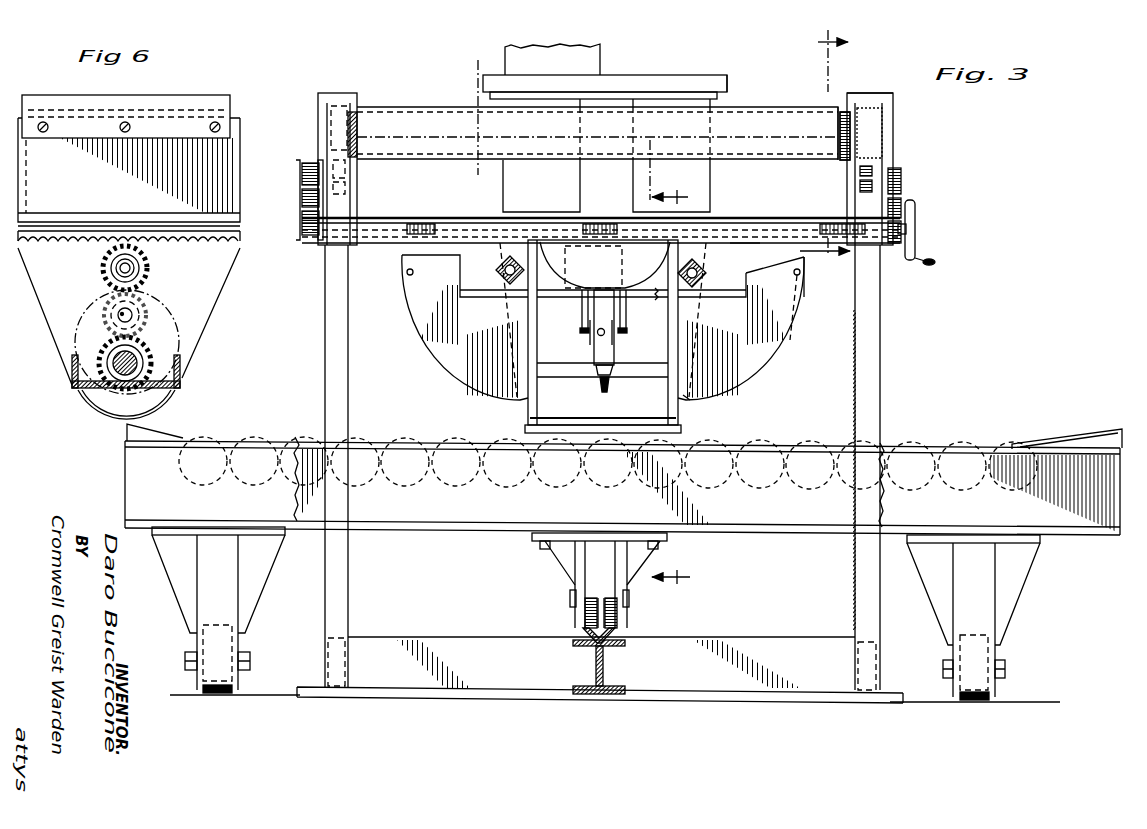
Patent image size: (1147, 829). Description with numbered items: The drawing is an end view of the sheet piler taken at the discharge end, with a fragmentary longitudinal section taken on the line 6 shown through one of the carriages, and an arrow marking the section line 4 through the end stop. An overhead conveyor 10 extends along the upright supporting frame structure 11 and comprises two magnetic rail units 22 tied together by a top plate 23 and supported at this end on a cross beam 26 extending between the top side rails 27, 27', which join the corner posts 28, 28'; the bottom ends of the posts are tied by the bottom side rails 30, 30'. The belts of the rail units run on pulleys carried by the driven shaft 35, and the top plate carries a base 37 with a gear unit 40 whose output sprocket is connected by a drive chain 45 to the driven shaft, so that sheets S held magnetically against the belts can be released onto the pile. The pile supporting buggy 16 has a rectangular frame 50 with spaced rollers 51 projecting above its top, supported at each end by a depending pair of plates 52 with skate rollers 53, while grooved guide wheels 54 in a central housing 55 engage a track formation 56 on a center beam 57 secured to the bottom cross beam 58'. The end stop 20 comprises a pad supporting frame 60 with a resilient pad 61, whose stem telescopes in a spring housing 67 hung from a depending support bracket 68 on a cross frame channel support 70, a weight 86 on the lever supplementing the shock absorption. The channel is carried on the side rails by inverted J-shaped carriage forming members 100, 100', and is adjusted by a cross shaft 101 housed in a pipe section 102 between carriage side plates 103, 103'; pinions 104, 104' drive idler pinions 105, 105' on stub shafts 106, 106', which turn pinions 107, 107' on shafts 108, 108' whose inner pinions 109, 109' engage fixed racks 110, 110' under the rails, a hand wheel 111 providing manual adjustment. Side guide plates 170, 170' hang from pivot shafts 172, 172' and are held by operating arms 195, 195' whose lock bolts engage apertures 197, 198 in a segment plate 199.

In FIG. 3, the section line 4— 4 is at (681, 388).
In FIG. 3, the section line 6— 6 is at (822, 152).
In FIG. 3, the overhead conveyor 10 is at (632, 74).
In FIG. 3, the upright supporting frame structure 11 is at (336, 697).
In FIG. 3, the pile supporting buggy 16 is at (778, 540).
In FIG. 3, the end stop 20 is at (658, 412).
In FIG. 3, the magnetic rail unit 22 is at (728, 183).
In FIG. 3, the top plate 23 is at (727, 90).
In FIG. 3, the cross beam 26 is at (840, 112).
In FIG. 6, the top side rail 27 is at (129, 170).
In FIG. 3, the top side rail 27 is at (891, 123).
In FIG. 3, the top side rail 27' is at (309, 123).
In FIG. 3, the corner post 28 is at (882, 467).
In FIG. 3, the corner post 28' is at (315, 466).
In FIG. 3, the bottom side rail 30 is at (885, 664).
In FIG. 3, the bottom side rail 30' is at (313, 662).
In FIG. 3, the driven shaft 35 is at (649, 170).
In FIG. 3, the base 37 is at (692, 75).
In FIG. 3, the gear unit 40 is at (505, 55).
In FIG. 3, the drive chain 45 is at (478, 84).
In FIG. 3, the rectangular frame 50 is at (1043, 445).
In FIG. 3, the rollers 51 is at (1000, 446).
In FIG. 3, the depending pair of plates 52 is at (953, 612).
In FIG. 3, the skate rollers 53 is at (995, 695).
In FIG. 3, the guide wheels 54 is at (582, 620).
In FIG. 3, the housing 55 is at (556, 566).
In FIG. 3, the track formation 56 is at (620, 628).
In FIG. 3, the center beam 57 is at (604, 660).
In FIG. 3, the bottom cross beam 58' is at (601, 647).
In FIG. 3, the pad supporting frame 60 is at (678, 360).
In FIG. 3, the pad 61 is at (626, 310).
In FIG. 3, the spring housing 67 is at (592, 344).
In FIG. 3, the depending support bracket 68 is at (566, 296).
In FIG. 6, the cross frame channel support 70 is at (180, 366).
In FIG. 3, the cross frame channel support 70 is at (735, 243).
In FIG. 3, the weight 86 is at (592, 382).
In FIG. 6, the carriage forming member 100 is at (126, 103).
In FIG. 3, the carriage forming member 100 is at (878, 85).
In FIG. 3, the carriage forming member 100' is at (597, 116).
In FIG. 6, the cross shaft 101 is at (150, 361).
In FIG. 3, the cross shaft 101 is at (410, 219).
In FIG. 6, the pipe section 102 is at (104, 356).
In FIG. 3, the pipe section 102 is at (446, 219).
In FIG. 6, the carriage side plate 103 is at (134, 316).
In FIG. 3, the carriage side plate 103 is at (894, 169).
In FIG. 3, the carriage side plate 103' is at (314, 169).
In FIG. 6, the pinion 104 is at (132, 342).
In FIG. 3, the pinion 104 is at (916, 266).
In FIG. 3, the pinion 104' is at (297, 213).
In FIG. 6, the idler pinion 105 is at (148, 306).
In FIG. 3, the idler pinion 105 is at (940, 225).
In FIG. 3, the idler pinion 105' is at (290, 174).
In FIG. 6, the stub shaft 106 is at (102, 309).
In FIG. 3, the stub shaft 106 is at (927, 192).
In FIG. 3, the stub shaft 106' is at (290, 201).
In FIG. 3, the pinion 107 is at (921, 168).
In FIG. 3, the pinion 107' is at (299, 189).
In FIG. 6, the shaft 108 is at (146, 268).
In FIG. 3, the shaft 108 is at (842, 180).
In FIG. 3, the shaft 108' is at (367, 177).
In FIG. 6, the pinion 109 is at (88, 268).
In FIG. 3, the pinion 109 is at (838, 197).
In FIG. 3, the pinion 109' is at (364, 197).
In FIG. 6, the fixed rack 110 is at (129, 215).
In FIG. 3, the fixed rack 110 is at (818, 146).
In FIG. 3, the fixed rack 110' is at (371, 134).
In FIG. 6, the hand wheel 111 is at (95, 400).
In FIG. 3, the hand wheel 111 is at (915, 226).
In FIG. 3, the side guide plate 170 is at (700, 320).
In FIG. 3, the side guide plate 170' is at (489, 310).
In FIG. 3, the pivot shaft 172 is at (660, 320).
In FIG. 3, the pivot shaft 172' is at (498, 320).
In FIG. 3, the operating arm 195 is at (741, 329).
In FIG. 3, the operating arm 195' is at (465, 327).
In FIG. 3, the aperture 197 is at (693, 396).
In FIG. 3, the aperture 198 is at (809, 302).
In FIG. 3, the segment plate 199 is at (784, 345).
In FIG. 3, the sheets S is at (528, 420).